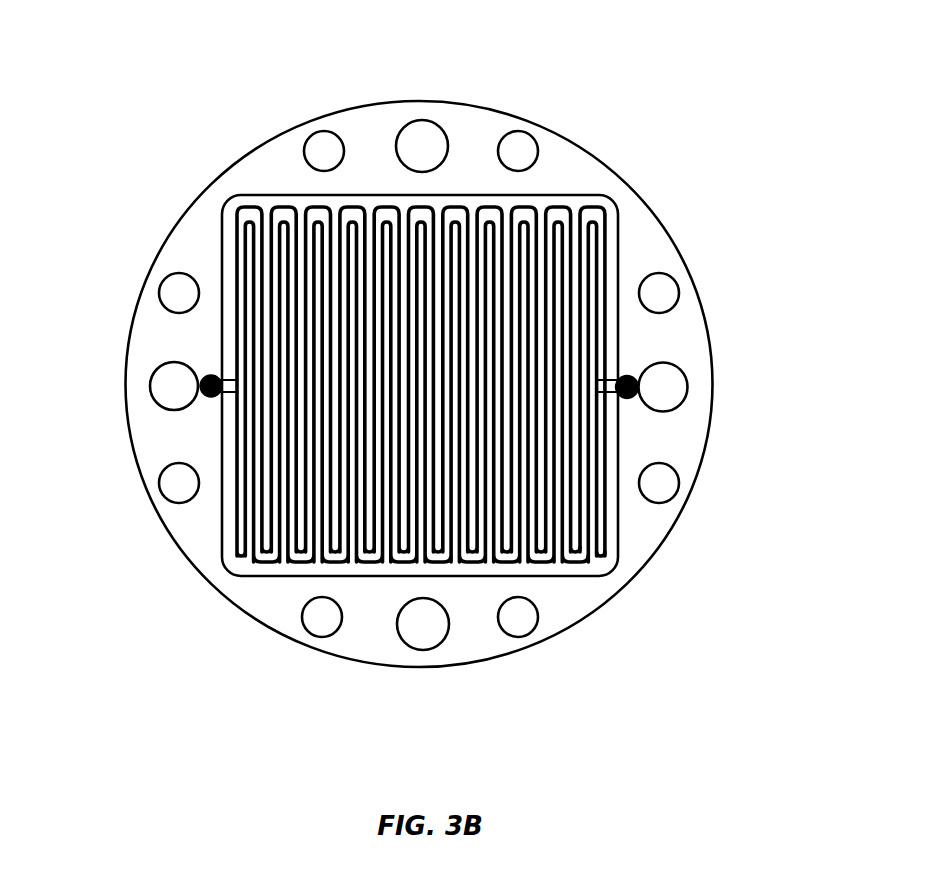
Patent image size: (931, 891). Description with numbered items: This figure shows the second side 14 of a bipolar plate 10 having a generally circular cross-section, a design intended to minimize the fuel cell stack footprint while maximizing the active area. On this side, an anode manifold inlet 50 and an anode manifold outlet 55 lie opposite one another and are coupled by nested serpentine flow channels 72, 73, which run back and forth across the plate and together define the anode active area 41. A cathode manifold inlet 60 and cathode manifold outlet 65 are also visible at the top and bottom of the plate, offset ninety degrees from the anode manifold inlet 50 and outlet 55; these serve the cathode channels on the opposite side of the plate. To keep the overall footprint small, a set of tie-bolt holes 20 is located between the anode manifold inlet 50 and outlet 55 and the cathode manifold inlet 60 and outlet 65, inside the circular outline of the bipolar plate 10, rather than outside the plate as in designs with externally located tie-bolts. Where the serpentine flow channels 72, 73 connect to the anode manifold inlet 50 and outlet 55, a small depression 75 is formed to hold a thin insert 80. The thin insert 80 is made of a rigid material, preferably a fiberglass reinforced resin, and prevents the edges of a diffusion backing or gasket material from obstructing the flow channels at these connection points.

The bipolar plate 10 is at (473, 100).
The second side 14 is at (288, 184).
The tie-bolt holes 20 is at (317, 147).
The anode active area 41 is at (228, 237).
The anode manifold inlet 50 is at (160, 386).
The anode manifold outlet 55 is at (688, 387).
The cathode manifold inlet 60 is at (413, 133).
The cathode manifold outlet 65 is at (425, 638).
The serpentine flow channel 72 is at (600, 203).
The serpentine flow channel 73 is at (606, 553).
The small depression 75 is at (637, 397).
The thin insert 80 is at (635, 379).